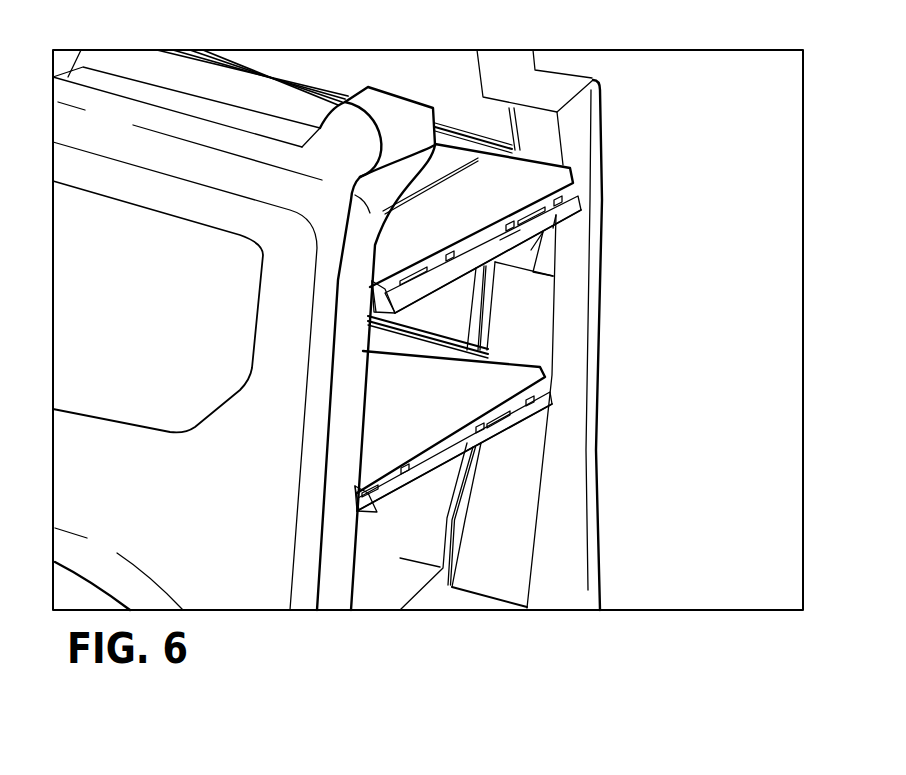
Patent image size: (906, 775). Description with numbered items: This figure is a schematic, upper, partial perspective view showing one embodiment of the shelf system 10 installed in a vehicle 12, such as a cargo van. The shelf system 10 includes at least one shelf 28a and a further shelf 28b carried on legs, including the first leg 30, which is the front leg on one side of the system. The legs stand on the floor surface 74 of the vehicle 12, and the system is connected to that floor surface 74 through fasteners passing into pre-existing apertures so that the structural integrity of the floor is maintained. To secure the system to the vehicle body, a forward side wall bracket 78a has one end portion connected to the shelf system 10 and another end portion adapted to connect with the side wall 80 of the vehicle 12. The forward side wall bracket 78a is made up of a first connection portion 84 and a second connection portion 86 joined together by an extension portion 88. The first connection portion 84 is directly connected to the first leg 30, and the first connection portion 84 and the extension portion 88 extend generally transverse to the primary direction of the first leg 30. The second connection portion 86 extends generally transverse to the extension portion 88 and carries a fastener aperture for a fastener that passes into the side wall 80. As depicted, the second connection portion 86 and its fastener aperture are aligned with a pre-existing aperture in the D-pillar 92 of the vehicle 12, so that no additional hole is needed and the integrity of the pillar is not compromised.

The shelf system 10 is at (598, 137).
The vehicle 12 is at (160, 523).
The shelf 28a is at (447, 237).
The shelf 28b is at (440, 410).
The first leg 30 is at (462, 528).
The floor surface 74 is at (458, 603).
The forward side wall bracket 78a is at (532, 250).
The side wall 80 is at (540, 127).
The first connection portion 84 is at (483, 272).
The second connection portion 86 is at (553, 240).
The extension portion 88 is at (513, 252).
The D-pillar 92 is at (538, 303).